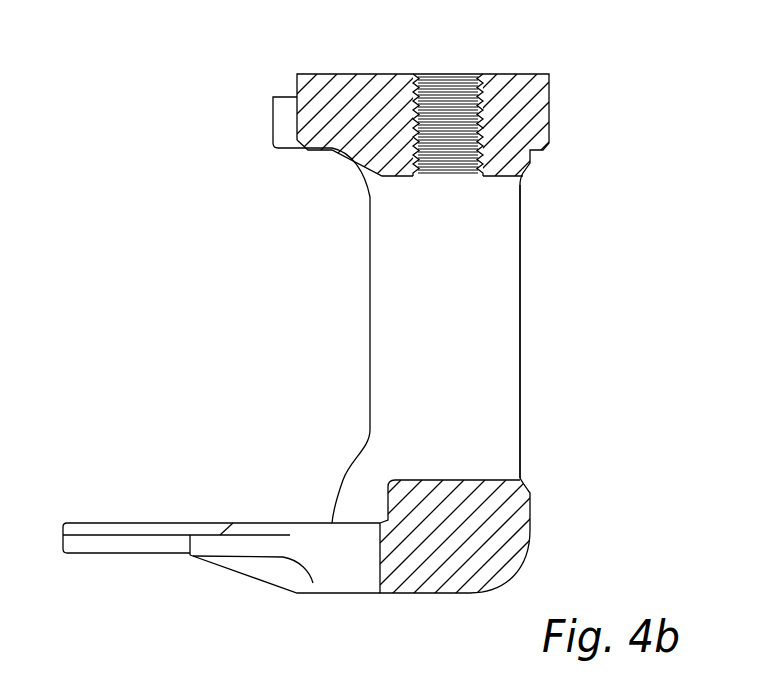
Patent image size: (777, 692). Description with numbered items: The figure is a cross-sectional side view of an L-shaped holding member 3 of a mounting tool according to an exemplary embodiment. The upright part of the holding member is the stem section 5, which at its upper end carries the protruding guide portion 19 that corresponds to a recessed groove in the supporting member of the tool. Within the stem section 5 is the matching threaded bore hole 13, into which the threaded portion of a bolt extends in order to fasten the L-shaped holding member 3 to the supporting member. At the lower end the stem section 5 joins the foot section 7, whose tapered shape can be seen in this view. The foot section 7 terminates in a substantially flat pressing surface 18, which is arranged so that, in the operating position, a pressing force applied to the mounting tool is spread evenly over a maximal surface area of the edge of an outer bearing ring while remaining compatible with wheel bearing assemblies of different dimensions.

The L-shaped holding member 3 is at (586, 110).
The stem section 5 is at (521, 314).
The foot section 7 is at (340, 558).
The threaded bore hole 13 is at (455, 100).
The pressing surface 18 is at (84, 561).
The protruding guide portion 19 is at (327, 88).